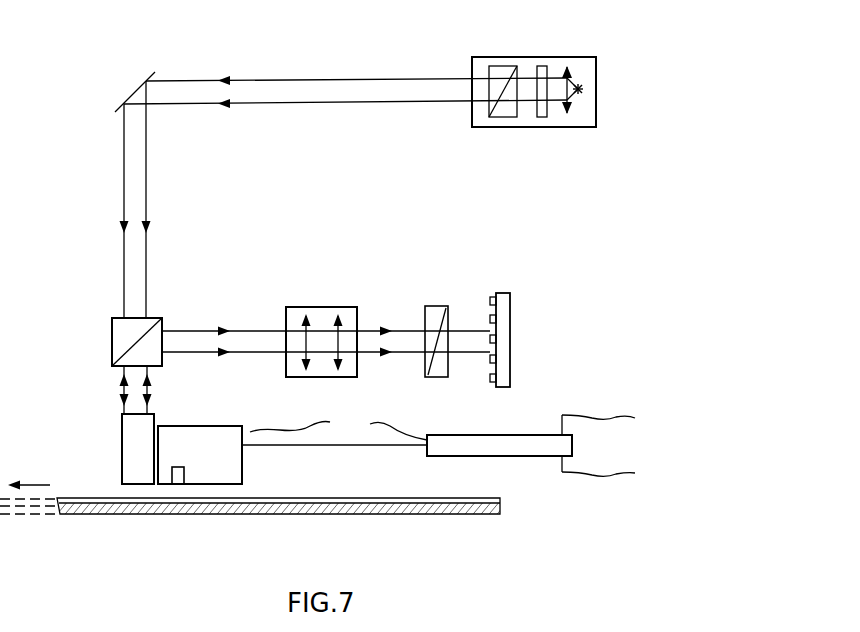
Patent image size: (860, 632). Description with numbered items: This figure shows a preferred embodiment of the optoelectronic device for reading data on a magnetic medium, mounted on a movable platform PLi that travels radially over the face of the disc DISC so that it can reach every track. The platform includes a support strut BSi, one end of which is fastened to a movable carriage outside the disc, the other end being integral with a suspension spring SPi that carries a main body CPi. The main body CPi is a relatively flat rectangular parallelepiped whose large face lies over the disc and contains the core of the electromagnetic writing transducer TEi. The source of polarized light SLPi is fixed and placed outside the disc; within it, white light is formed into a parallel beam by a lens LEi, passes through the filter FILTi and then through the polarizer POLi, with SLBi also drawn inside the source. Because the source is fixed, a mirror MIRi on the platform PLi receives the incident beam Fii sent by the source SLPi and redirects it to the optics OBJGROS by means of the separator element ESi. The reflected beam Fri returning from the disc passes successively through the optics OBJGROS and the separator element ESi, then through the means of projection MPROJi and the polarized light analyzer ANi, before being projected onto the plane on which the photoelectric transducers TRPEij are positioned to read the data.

The mirror MIRi is at (148, 78).
The incident beam Fii is at (328, 187).
The source of polarized light SLPi is at (596, 72).
The polarizer POLi is at (498, 66).
The filter FILTi is at (545, 65).
The lens LEi is at (572, 114).
The light source SLBi is at (584, 89).
The separator element ESi is at (112, 343).
The reflected beam Fri is at (326, 332).
The means of projection MPROJi is at (301, 307).
The polarized light analyzer ANi is at (430, 306).
The photoelectric transducers TRPEij is at (497, 358).
The optics OBJGROS is at (122, 438).
The main body CPi is at (242, 460).
The electromagnetic transducer TEi is at (176, 448).
The suspension spring SPi is at (346, 446).
The platform PLi is at (314, 445).
The support strut BSi is at (494, 435).
The disc DISC is at (283, 540).